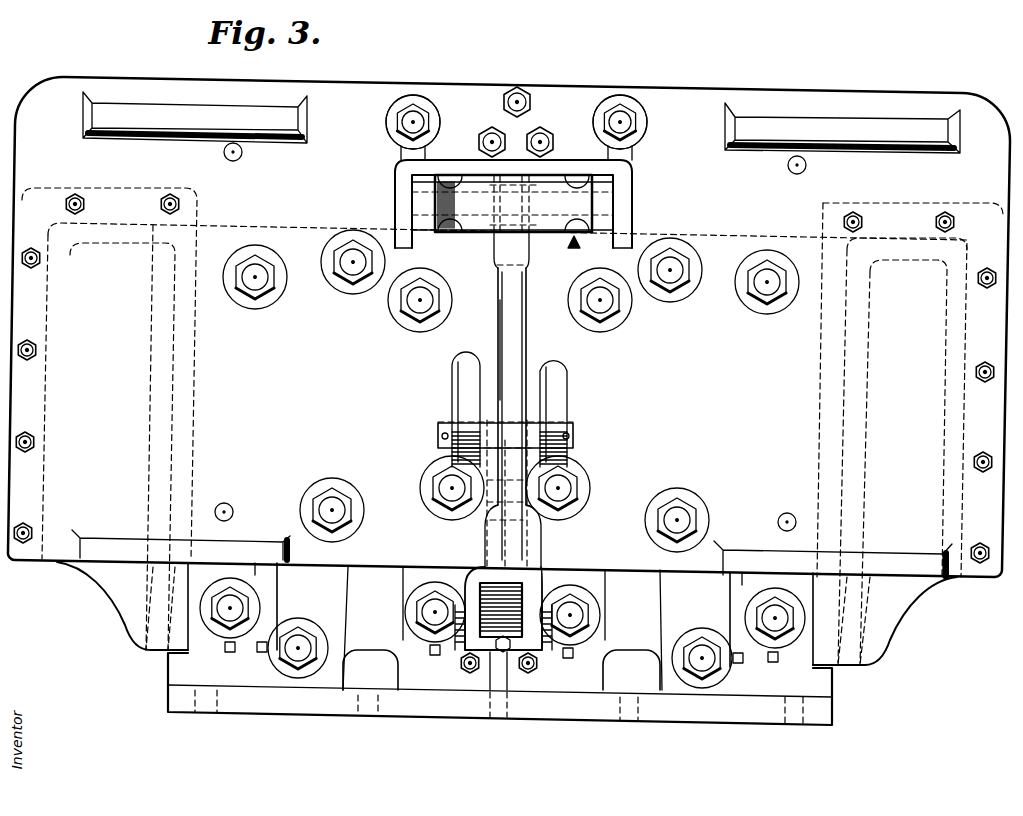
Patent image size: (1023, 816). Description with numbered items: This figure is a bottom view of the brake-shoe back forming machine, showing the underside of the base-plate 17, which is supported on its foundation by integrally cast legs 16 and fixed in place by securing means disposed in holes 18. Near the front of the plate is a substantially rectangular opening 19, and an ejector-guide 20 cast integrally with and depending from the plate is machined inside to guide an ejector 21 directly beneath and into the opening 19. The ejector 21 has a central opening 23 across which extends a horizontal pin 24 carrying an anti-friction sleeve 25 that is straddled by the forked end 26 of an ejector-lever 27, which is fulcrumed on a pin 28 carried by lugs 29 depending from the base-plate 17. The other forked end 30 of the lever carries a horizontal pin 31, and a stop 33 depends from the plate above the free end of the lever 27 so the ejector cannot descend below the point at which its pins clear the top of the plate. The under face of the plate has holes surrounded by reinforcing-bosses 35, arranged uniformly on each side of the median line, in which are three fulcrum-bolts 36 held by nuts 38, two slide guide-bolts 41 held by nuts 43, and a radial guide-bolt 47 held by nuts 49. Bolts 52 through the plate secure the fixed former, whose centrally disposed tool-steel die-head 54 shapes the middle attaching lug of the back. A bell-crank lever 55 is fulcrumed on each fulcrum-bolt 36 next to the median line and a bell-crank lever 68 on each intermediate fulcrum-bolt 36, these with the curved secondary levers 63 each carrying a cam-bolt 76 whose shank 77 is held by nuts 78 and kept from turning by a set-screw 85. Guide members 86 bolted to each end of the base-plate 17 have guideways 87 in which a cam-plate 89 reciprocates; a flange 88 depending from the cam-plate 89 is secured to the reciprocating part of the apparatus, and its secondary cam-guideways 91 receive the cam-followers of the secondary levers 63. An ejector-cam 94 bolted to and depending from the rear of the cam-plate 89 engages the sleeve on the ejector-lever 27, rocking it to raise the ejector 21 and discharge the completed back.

The legs 16 is at (192, 122).
The base-plate 17 is at (509, 371).
The holes 18 is at (233, 162).
The rectangular opening 19 is at (575, 246).
The ejector-guide 20 is at (633, 195).
The ejector 21 is at (600, 215).
The central opening 23 is at (540, 240).
The pin 24 is at (630, 180).
The anti-friction sleeve 25 is at (472, 240).
The forked end 26 is at (496, 242).
The ejector-lever 27 is at (522, 336).
The fulcrum pin 28 is at (575, 428).
The lugs 29 is at (455, 400).
The forked lever end 30 is at (545, 580).
The pin 31 is at (552, 602).
The stop 33 is at (486, 514).
The reinforcing-bosses 35 is at (285, 290).
The fulcrum-bolts 36 is at (256, 290).
The nuts 38 is at (272, 266).
The slide guide-bolts 41 is at (356, 280).
The nuts 43 is at (418, 322).
The radial guide-bolt 47 is at (390, 128).
The nuts 49 is at (425, 105).
The bolts 52 is at (542, 128).
The die-head 54 is at (500, 340).
The bell-crank lever 55 is at (403, 580).
The curved secondary levers 63 is at (196, 625).
The bell-crank lever 68 is at (509, 628).
The cam-bolt 76 is at (245, 608).
The shank 77 is at (302, 646).
The nuts 78 is at (398, 655).
The set-screw 85 is at (235, 654).
The guide members 86 is at (100, 590).
The guideway 87 is at (172, 398).
The flange 88 is at (833, 710).
The cam-plate 89 is at (330, 692).
The secondary cam-guideways 91 is at (258, 565).
The ejector-cam 94 is at (510, 692).